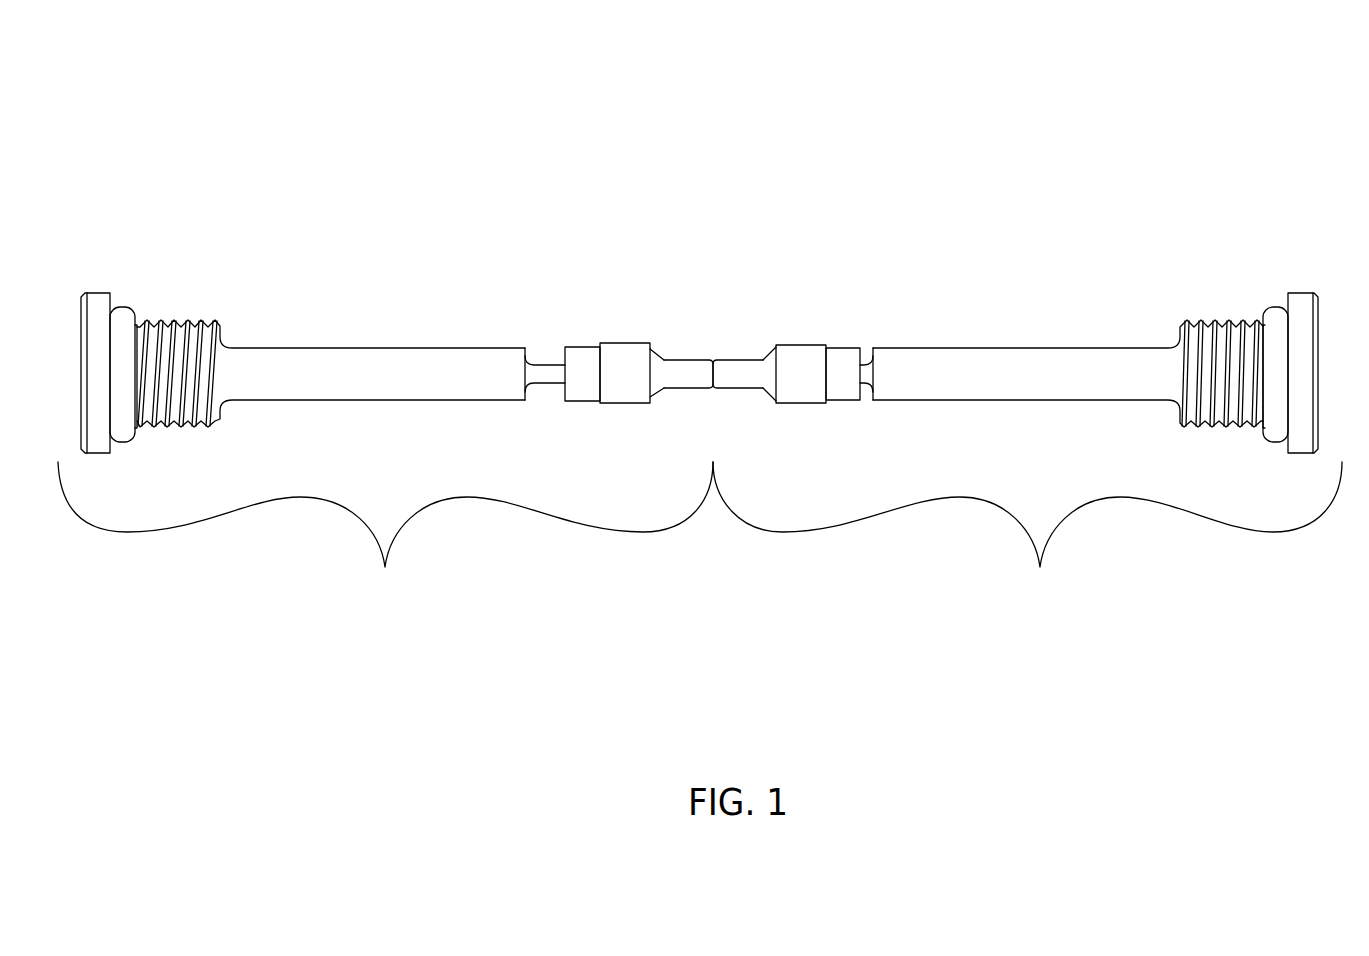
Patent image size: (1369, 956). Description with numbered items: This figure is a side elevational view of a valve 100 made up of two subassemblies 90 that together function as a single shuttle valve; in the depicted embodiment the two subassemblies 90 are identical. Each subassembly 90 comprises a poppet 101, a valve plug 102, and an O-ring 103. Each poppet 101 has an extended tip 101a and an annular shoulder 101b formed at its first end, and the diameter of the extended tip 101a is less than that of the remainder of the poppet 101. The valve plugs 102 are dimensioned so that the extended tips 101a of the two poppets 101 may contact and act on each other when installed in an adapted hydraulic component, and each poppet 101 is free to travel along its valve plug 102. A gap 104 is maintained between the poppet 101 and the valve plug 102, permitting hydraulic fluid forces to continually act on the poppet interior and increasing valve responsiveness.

The valve 100 is at (907, 111).
The subassembly 90 is at (700, 530).
The poppet 101 is at (590, 306).
The extended tip 101a is at (738, 372).
The annular shoulder 101b is at (768, 355).
The valve plug 102 is at (355, 306).
The O-ring 103 is at (118, 305).
The gap 104 is at (868, 353).